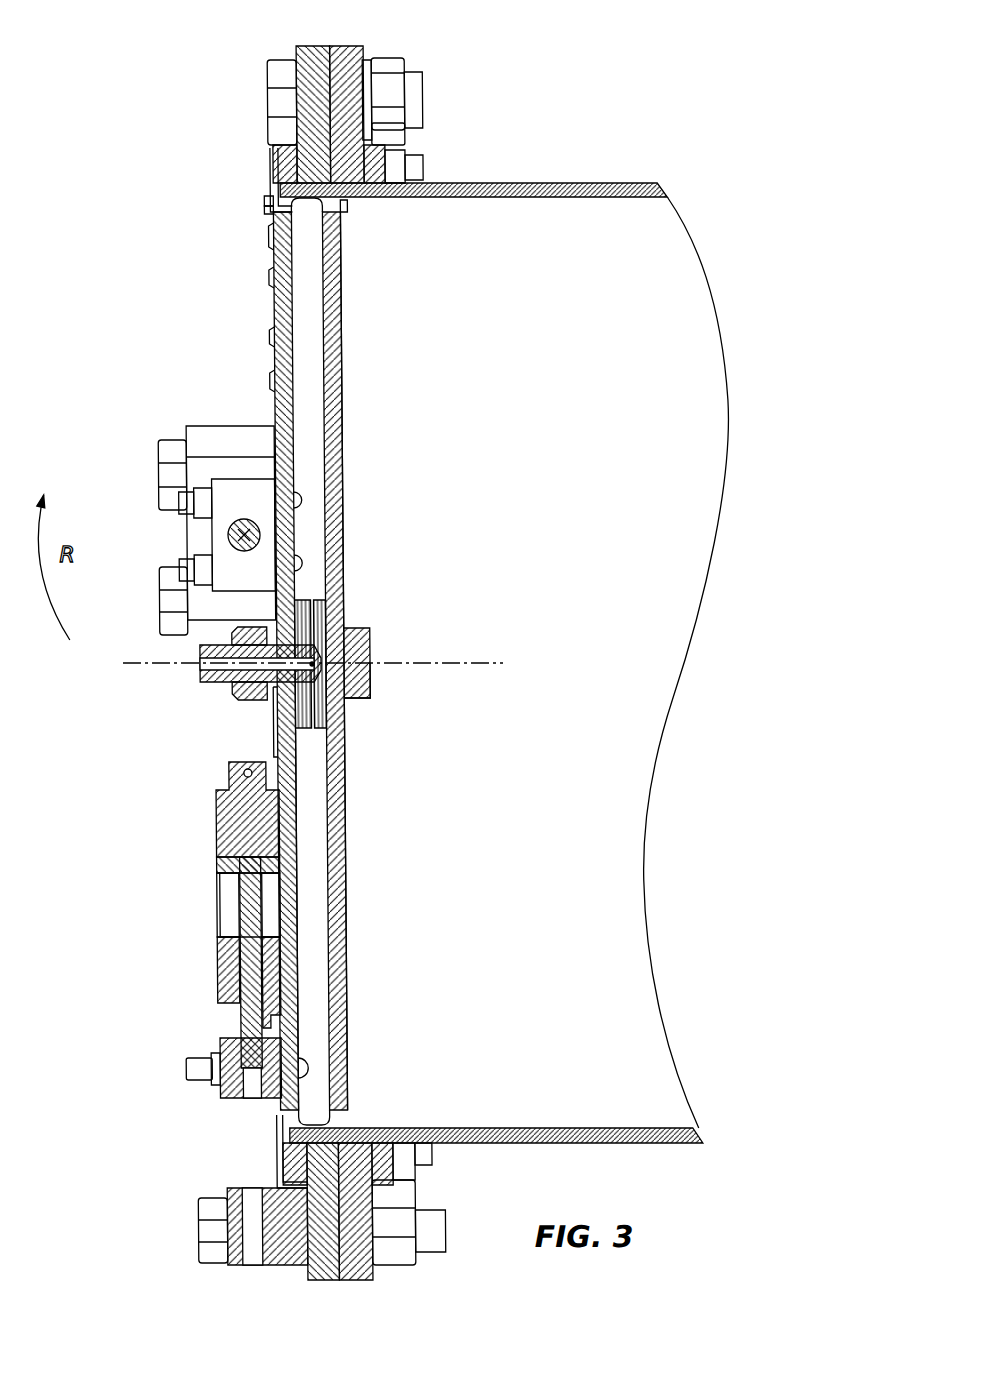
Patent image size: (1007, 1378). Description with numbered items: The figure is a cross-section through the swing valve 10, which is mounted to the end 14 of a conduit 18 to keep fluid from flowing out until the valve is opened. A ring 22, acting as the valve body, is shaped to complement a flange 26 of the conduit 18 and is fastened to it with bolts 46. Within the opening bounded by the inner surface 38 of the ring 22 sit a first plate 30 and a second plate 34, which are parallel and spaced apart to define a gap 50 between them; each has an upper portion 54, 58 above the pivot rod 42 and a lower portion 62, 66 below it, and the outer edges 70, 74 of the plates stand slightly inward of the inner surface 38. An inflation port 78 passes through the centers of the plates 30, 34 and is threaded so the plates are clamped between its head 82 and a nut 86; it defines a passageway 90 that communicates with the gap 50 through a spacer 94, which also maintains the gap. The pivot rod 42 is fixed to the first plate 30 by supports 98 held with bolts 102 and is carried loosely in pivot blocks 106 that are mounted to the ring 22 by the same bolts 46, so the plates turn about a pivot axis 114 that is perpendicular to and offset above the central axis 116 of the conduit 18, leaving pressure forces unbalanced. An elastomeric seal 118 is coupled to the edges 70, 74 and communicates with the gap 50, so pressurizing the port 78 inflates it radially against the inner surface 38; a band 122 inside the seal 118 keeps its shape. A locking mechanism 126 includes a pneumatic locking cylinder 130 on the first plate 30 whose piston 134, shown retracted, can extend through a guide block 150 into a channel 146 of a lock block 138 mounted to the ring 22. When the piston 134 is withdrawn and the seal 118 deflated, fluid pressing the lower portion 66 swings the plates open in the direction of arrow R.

The swing valve 10 is at (104, 190).
The end 14 is at (334, 1128).
The conduit 18 is at (611, 181).
The ring 22 is at (317, 46).
The flange 26 is at (352, 45).
The first plate 30 is at (278, 313).
The second plate 34 is at (338, 315).
The inner surface 38 is at (268, 195).
The pivot rod 42 is at (251, 520).
The bolts 46 is at (285, 93).
The gap 50 is at (314, 373).
The upper portion 54 is at (285, 262).
The upper portion 58 is at (346, 267).
The lower portion 62 is at (296, 990).
The lower portion 66 is at (345, 1038).
The outer edge 70 is at (270, 208).
The outer edge 74 is at (348, 204).
The inflation port 78 is at (370, 642).
The head 82 is at (368, 688).
The nut 86 is at (245, 700).
The passageway 90 is at (197, 663).
The spacer 94 is at (323, 608).
The supports 98 is at (189, 537).
The bolts 102 is at (246, 488).
The pivot blocks 106 is at (215, 427).
The pivot axis 114 is at (299, 547).
The central axis 116 is at (472, 663).
The elastomeric seal 118 is at (402, 180).
The band 122 is at (281, 150).
The locking mechanism 126 is at (158, 913).
The locking cylinder 130 is at (214, 828).
The piston 134 is at (236, 903).
The lock block 138 is at (280, 1258).
The channel 146 is at (240, 1255).
The guide block 150 is at (217, 1095).